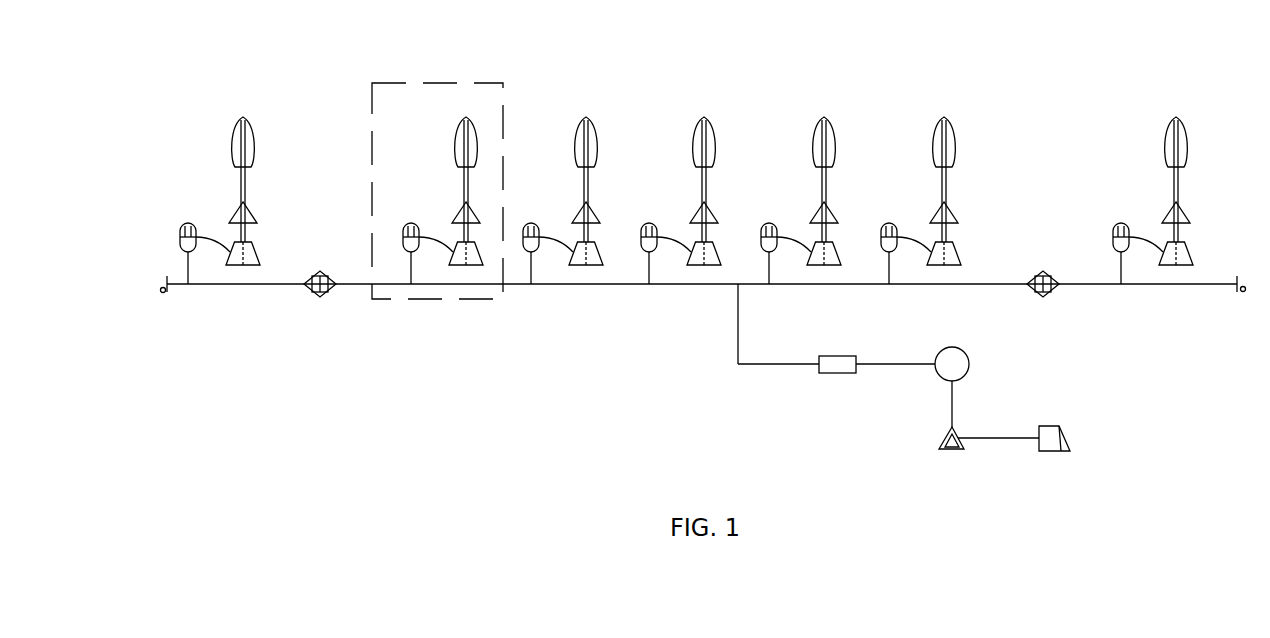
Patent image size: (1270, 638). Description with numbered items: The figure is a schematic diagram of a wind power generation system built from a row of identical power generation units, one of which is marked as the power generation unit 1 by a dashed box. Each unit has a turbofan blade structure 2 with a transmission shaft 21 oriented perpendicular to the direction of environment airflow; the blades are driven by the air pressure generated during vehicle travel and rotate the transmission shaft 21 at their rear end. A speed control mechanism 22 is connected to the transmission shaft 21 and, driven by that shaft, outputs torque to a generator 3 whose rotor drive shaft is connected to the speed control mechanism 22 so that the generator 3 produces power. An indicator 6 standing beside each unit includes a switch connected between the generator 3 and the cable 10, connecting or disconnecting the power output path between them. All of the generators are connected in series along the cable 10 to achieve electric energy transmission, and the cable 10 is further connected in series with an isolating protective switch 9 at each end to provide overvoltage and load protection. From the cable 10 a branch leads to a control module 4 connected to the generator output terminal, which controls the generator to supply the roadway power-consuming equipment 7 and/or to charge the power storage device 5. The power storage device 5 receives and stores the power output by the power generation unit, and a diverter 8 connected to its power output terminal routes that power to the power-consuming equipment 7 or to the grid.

The power generation unit 1 is at (408, 157).
The turbofan blade structure 2 is at (946, 143).
The transmission shaft 21 is at (946, 188).
The speed control mechanism 22 is at (946, 212).
The generator 3 is at (948, 255).
The control module 4 is at (838, 359).
The power storage device 5 is at (955, 357).
The indicator 6 is at (885, 238).
The roadway power-consuming equipment 7 is at (1062, 447).
The diverter 8 is at (948, 447).
The isolating protective switch 9 is at (322, 293).
The cable 10 is at (675, 284).